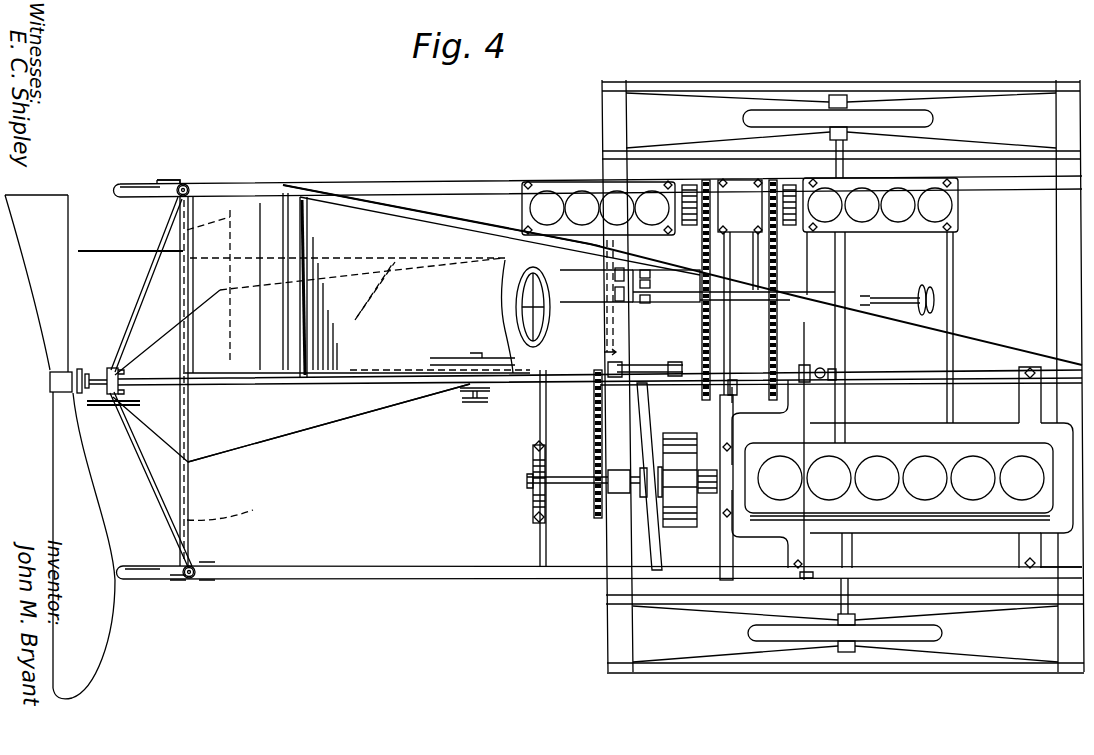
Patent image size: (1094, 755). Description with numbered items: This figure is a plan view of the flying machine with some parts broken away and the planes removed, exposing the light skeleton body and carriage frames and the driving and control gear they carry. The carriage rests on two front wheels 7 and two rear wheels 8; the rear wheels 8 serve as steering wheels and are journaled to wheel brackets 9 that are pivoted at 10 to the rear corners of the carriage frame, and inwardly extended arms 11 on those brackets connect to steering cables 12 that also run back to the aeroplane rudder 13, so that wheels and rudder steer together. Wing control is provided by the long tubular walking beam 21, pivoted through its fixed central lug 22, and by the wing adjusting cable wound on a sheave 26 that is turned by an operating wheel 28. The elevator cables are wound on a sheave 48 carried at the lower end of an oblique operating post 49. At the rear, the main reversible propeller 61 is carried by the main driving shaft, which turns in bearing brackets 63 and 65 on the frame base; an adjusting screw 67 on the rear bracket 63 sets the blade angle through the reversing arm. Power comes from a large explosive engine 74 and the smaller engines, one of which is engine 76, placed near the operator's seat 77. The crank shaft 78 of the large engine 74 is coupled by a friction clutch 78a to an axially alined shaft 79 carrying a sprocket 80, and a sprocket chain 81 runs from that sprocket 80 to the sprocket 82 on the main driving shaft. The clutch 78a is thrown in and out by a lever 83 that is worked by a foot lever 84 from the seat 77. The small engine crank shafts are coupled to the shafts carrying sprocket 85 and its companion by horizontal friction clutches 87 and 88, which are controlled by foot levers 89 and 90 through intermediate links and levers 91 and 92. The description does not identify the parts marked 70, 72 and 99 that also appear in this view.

The front wheels 7 is at (917, 118).
The rear wheels 8 is at (127, 190).
The wheel brackets 9 is at (167, 182).
The pivot 10 is at (187, 187).
The inwardly extended arms 11 is at (218, 220).
The steering cables 12 is at (390, 190).
The aeroplane rudder 13 is at (138, 253).
The walking beam 21 is at (229, 509).
The fixed central lug 22 is at (369, 291).
The sheave 26 is at (462, 398).
The operating wheel 28 is at (437, 360).
The sheave 48 is at (937, 300).
The oblique operating post 49 is at (877, 305).
The reversible propeller 61 is at (37, 247).
The rear bearing bracket 63 is at (115, 398).
The bearing bracket 65 is at (810, 427).
The adjusting screw 67 is at (125, 392).
The drive shaft 70 is at (893, 378).
The rear frame bar 72 is at (987, 565).
The large explosive engine 74 is at (893, 457).
The small explosive engine 76 is at (917, 183).
The operator's seat 77 is at (863, 638).
The crank shaft 78 is at (717, 510).
The friction clutch 78a is at (682, 507).
The axially alined shaft 79 is at (562, 190).
The sprocket 80 is at (773, 180).
The sprocket chain 81 is at (568, 480).
The sprocket 82 is at (593, 457).
The lever 83 is at (645, 447).
The foot lever 84 is at (630, 386).
The sprocket 85 is at (707, 180).
The horizontal friction clutch 87 is at (688, 185).
The horizontal friction clutch 88 is at (790, 183).
The foot lever 89 is at (618, 294).
The foot lever 90 is at (617, 273).
The intermediate links and levers 91 is at (667, 262).
The intermediate links and levers 92 is at (772, 256).
The steering wheel 99 is at (513, 300).